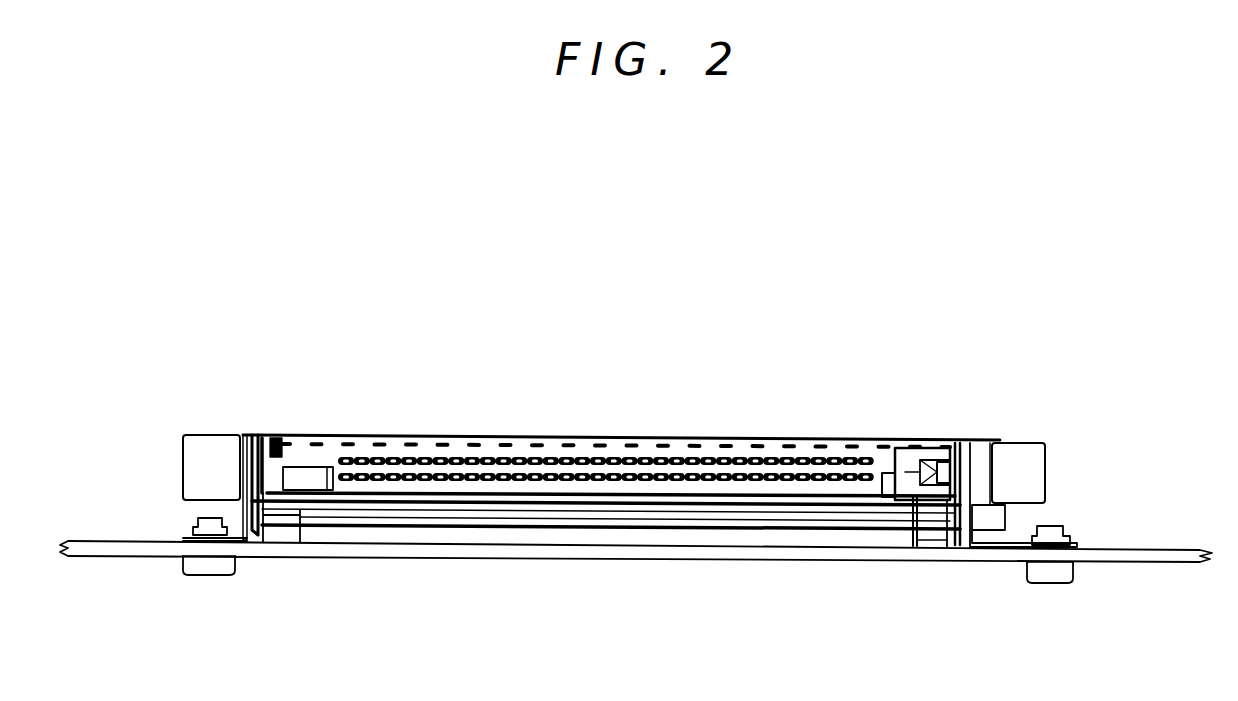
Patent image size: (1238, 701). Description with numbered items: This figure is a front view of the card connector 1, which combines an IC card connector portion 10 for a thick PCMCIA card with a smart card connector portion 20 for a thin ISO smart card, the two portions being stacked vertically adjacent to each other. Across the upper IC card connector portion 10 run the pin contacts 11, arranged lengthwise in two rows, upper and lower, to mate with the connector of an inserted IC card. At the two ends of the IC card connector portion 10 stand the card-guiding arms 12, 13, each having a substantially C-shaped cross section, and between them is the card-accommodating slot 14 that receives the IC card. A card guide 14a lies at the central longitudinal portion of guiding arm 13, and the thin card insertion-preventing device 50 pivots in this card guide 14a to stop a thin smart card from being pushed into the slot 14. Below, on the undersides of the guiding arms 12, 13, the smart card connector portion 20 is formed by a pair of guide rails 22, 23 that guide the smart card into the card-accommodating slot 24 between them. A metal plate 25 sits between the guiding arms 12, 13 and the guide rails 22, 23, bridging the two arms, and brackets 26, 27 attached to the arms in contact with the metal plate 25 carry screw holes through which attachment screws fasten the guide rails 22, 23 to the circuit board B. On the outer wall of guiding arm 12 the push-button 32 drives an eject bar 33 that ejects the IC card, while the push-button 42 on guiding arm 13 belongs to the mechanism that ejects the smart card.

The card connector 1 is at (627, 401).
The IC card connector portion 10 is at (399, 414).
The pin contacts 11 is at (512, 462).
The card-guiding arm 12 is at (254, 438).
The card-guiding arm 13 is at (960, 450).
The card-accommodating slot 14 is at (885, 457).
The card guide 14a is at (925, 465).
The thin card insertion-preventing device 50 is at (947, 436).
The smart card connector portion 20 is at (623, 538).
The guide rail 22 is at (283, 531).
The guide rail 23 is at (947, 550).
The card-accommodating slot 24 is at (930, 547).
The metal plate 25 is at (857, 527).
The bracket 26 is at (225, 532).
The bracket 27 is at (1022, 544).
The push-button 32 is at (200, 455).
The eject bar 33 is at (310, 466).
The push-button 42 is at (1033, 460).
The circuit board B is at (1165, 555).